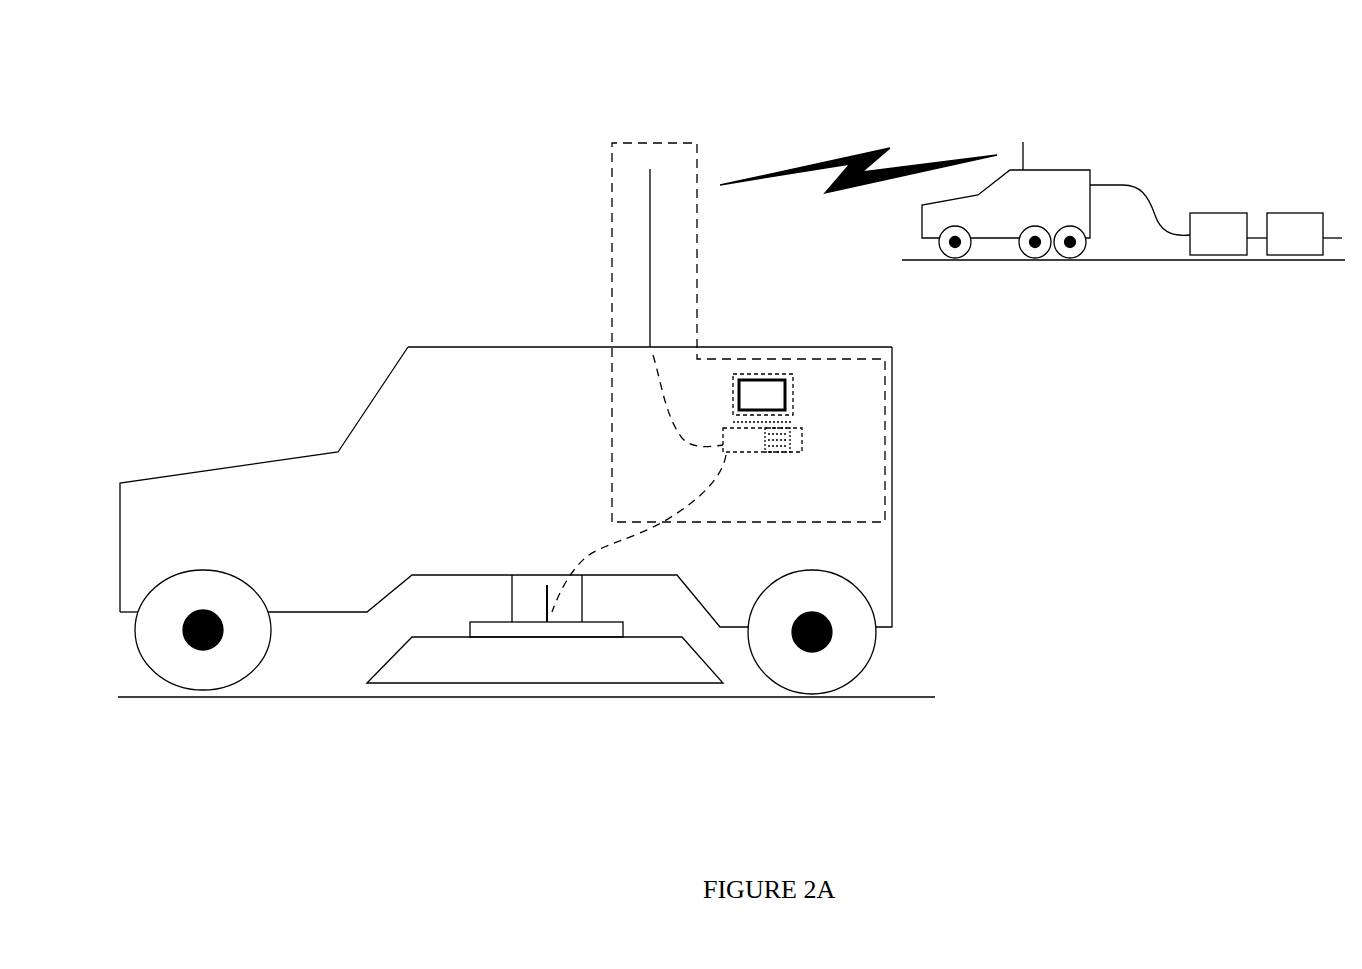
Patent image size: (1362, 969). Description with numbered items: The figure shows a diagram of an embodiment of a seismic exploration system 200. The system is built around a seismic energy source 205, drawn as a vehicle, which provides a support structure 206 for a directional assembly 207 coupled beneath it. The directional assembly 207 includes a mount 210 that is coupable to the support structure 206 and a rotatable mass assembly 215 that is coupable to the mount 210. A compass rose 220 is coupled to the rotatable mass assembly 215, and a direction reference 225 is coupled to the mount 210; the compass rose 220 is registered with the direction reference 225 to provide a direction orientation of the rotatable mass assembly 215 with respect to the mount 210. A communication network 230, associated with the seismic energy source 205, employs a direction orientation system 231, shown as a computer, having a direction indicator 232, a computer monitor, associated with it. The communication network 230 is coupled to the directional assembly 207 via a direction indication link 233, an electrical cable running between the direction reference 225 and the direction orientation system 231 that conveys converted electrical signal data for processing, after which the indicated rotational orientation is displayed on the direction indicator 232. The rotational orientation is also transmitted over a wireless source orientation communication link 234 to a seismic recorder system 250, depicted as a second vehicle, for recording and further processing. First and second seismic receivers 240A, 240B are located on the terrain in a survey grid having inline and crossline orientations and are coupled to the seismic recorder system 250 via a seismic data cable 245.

The seismic exploration system 200 is at (1262, 108).
The seismic energy source 205 is at (438, 344).
The support structure 206 is at (470, 360).
The directional assembly 207 is at (702, 730).
The mount 210 is at (512, 603).
The rotatable mass assembly 215 is at (382, 672).
The compass rose 220 is at (470, 630).
The direction reference 225 is at (546, 603).
The communication network 230 is at (805, 359).
The direction orientation system 231 is at (803, 443).
The direction indicator 232 is at (773, 395).
The direction indication link 233 is at (718, 468).
The source orientation communication link 234 is at (663, 387).
The first seismic receiver 240A is at (1203, 213).
The second seismic receiver 240B is at (1285, 213).
The seismic data cable 245 is at (1123, 183).
The seismic recorder system 250 is at (1062, 170).